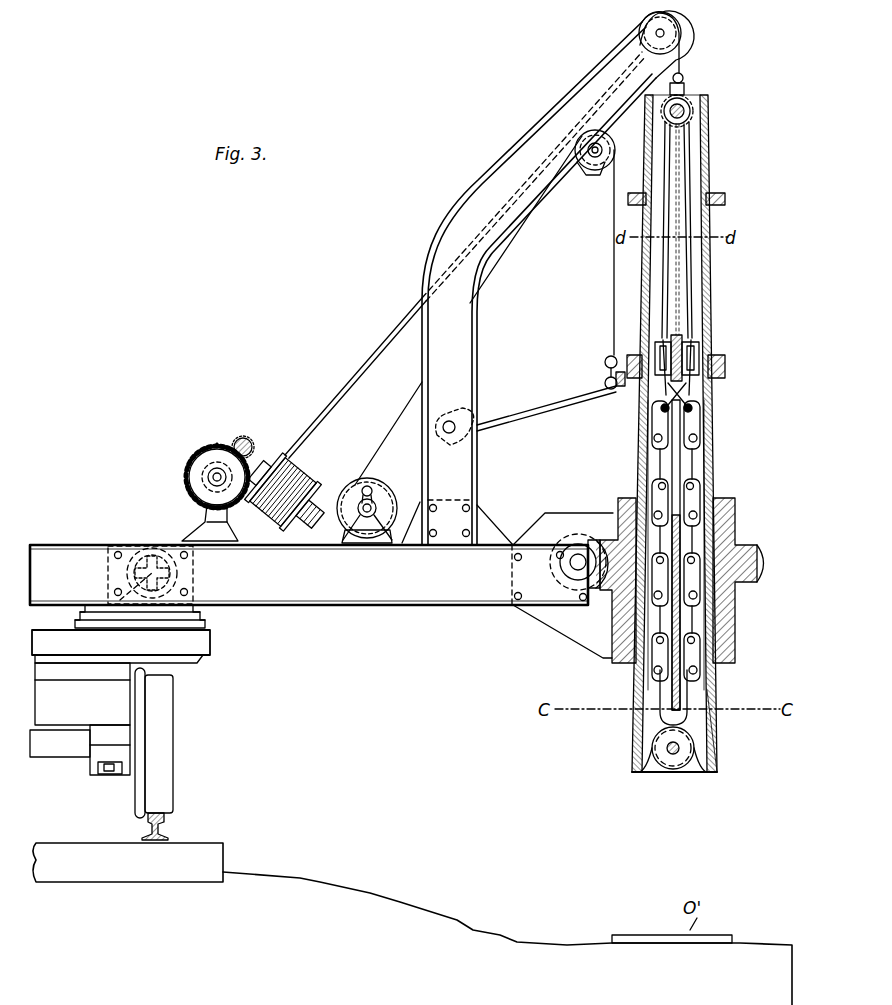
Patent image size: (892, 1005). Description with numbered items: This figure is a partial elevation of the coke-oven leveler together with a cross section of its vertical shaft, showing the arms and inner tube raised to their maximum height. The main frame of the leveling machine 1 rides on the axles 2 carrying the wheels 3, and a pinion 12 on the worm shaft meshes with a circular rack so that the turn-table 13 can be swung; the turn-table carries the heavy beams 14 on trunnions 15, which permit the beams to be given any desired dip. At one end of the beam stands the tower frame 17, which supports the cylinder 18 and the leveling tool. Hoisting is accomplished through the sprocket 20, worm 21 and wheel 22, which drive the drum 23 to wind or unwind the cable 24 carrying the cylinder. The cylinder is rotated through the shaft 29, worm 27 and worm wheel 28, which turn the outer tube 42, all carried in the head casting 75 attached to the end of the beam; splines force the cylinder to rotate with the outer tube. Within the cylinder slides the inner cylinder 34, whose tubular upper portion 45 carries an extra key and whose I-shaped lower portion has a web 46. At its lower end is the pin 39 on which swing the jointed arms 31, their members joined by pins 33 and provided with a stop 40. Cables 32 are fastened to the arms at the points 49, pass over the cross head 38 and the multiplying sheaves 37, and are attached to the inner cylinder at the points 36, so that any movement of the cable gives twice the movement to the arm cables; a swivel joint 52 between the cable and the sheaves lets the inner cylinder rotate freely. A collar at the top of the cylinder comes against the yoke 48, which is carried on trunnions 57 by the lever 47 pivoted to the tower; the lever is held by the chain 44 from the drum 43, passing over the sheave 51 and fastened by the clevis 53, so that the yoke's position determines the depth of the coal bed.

The leveling machine 1 is at (180, 666).
The axles 2 is at (70, 745).
The wheels 3 is at (173, 740).
The pinion 12 is at (212, 641).
The turn-table 13 is at (206, 618).
The beams 14 is at (370, 590).
The trunnions 15 is at (152, 548).
The tower frame 17 is at (487, 182).
The cylinder 18 is at (714, 257).
The sprocket 20 is at (190, 475).
The worm 21 is at (213, 470).
The wheel 22 is at (243, 437).
The drum 23 is at (283, 460).
The cable 24 is at (370, 360).
The worm 27 is at (612, 520).
The worm wheel 28 is at (758, 561).
The shaft 29 is at (573, 565).
The arms 31 is at (655, 460).
The cables 32 is at (664, 160).
The pins 33 is at (653, 438).
The inner cylinder 34 is at (640, 735).
The attachment points 36 is at (650, 350).
The sheaves 37 is at (690, 104).
The cross head 38 is at (690, 388).
The pin 39 is at (673, 762).
The stop 40 is at (663, 460).
The outer tube 42 is at (718, 721).
The drum 43 is at (376, 500).
The chain 44 is at (399, 418).
The upper portion 45 is at (710, 118).
The web 46 is at (683, 542).
The lever 47 is at (507, 414).
The yoke 48 is at (727, 365).
The attachment points 49 is at (660, 410).
The sheave 51 is at (590, 170).
The swivel joint 52 is at (684, 80).
The clevis 53 is at (604, 372).
The trunnions 57 is at (690, 332).
The head casting 75 is at (612, 620).